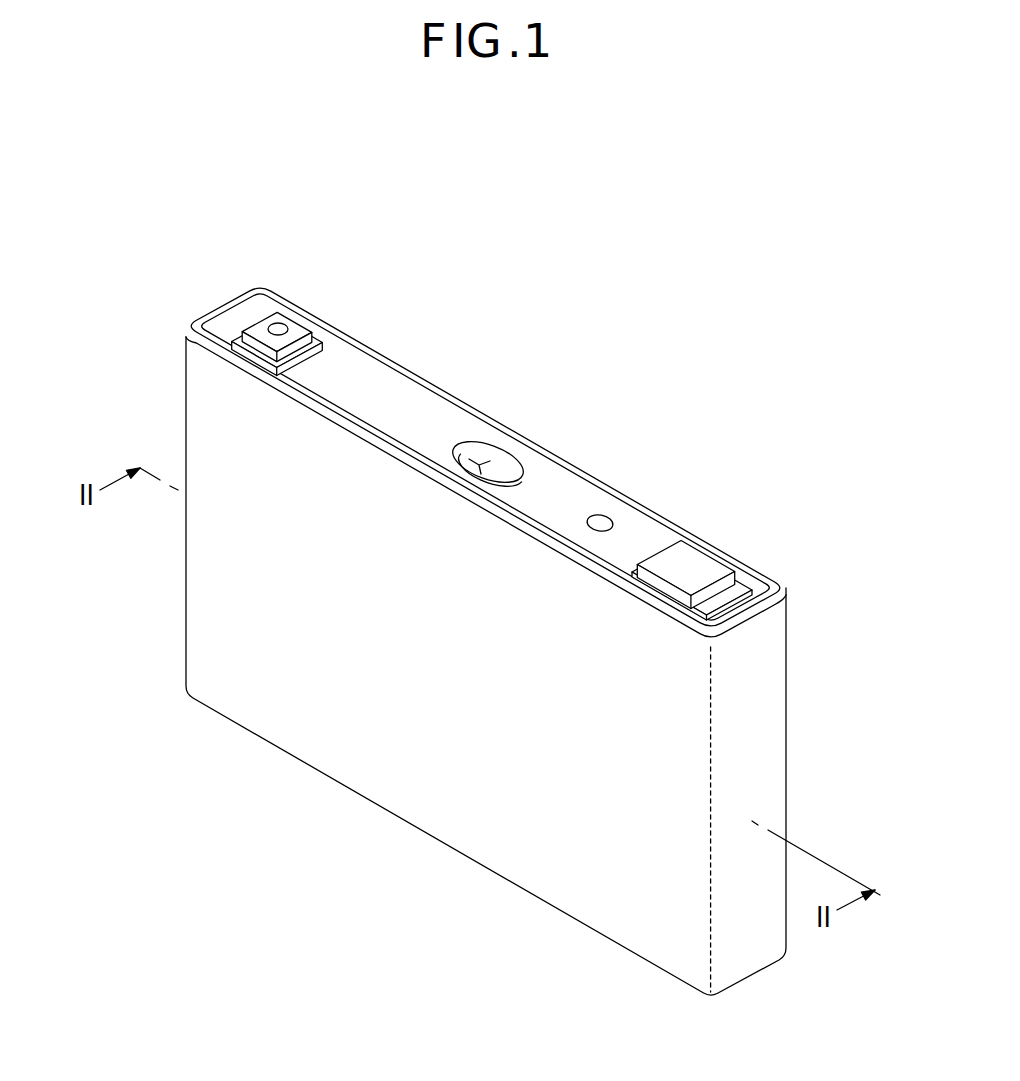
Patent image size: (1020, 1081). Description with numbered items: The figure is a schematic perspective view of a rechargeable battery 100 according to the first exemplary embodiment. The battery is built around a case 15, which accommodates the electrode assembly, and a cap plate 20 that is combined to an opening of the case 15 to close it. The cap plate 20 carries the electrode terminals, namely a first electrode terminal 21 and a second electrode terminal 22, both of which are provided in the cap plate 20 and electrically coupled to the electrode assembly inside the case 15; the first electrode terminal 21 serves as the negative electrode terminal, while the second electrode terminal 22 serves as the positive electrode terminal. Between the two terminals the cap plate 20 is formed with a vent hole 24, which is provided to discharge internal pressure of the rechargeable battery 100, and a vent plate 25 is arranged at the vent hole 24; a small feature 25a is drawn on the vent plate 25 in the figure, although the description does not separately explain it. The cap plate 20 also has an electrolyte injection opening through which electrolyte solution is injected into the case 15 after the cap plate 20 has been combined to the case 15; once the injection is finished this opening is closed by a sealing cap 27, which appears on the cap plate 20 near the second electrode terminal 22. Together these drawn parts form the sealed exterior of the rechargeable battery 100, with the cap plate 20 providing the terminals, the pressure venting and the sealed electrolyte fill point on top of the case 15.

The rechargeable battery 100 is at (486, 612).
The case 15 is at (412, 777).
The cap plate 20 is at (367, 385).
The first electrode terminal 21 is at (292, 317).
The second electrode terminal 22 is at (712, 555).
The vent hole 24 is at (473, 441).
The vent plate 25 is at (492, 460).
The notch 25a is at (505, 478).
The sealing cap 27 is at (601, 521).